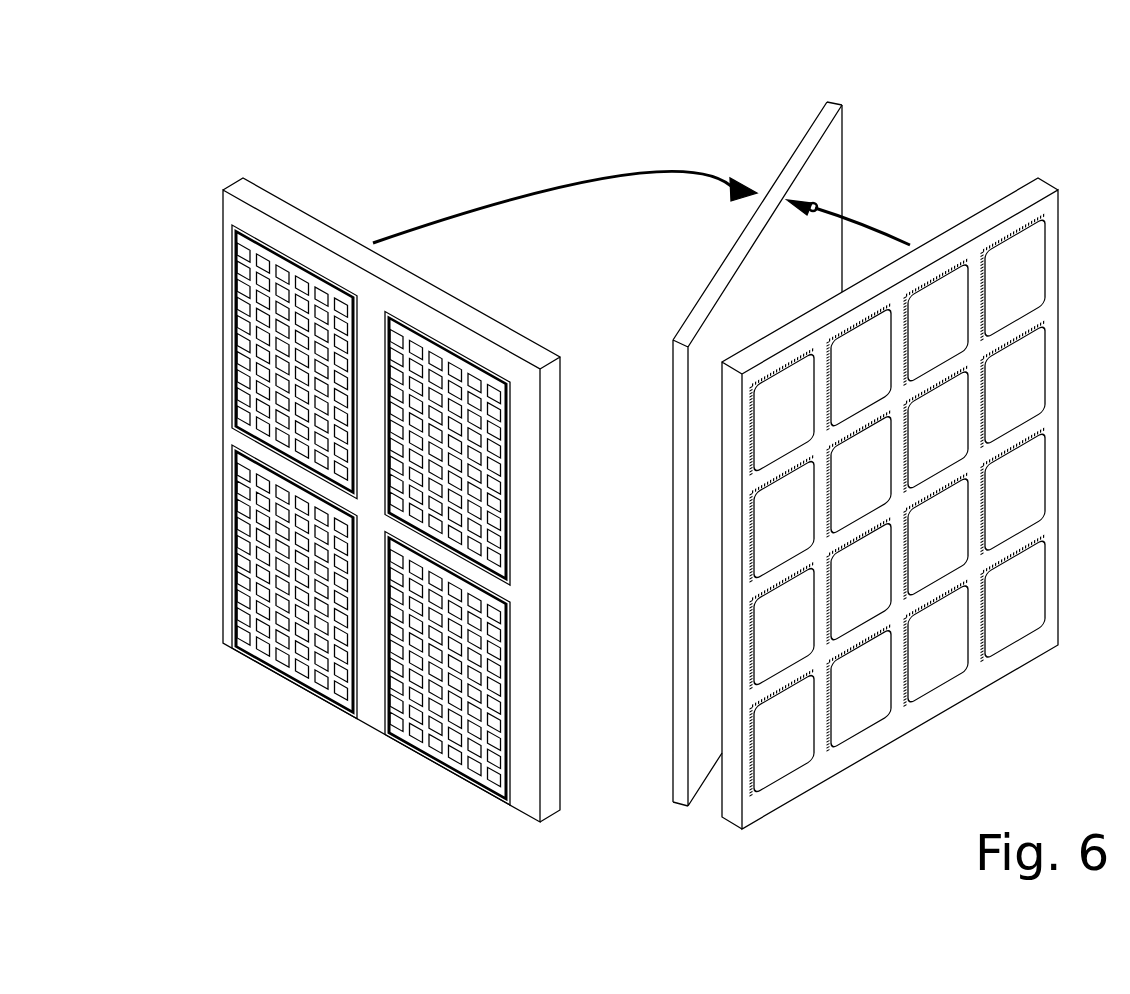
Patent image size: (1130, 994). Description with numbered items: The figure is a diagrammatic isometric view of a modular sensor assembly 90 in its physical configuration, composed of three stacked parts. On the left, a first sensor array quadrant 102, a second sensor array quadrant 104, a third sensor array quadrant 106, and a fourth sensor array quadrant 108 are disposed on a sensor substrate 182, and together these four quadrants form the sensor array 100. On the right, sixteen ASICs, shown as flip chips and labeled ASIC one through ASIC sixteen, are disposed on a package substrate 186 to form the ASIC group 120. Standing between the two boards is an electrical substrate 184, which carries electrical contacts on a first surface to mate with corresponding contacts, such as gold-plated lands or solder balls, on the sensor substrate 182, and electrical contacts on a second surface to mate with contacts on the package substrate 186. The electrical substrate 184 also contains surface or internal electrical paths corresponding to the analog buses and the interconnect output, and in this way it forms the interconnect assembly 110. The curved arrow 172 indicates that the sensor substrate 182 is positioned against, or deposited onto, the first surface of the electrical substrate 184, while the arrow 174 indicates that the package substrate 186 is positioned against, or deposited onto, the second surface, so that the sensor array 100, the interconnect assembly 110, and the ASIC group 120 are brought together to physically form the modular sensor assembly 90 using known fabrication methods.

The modular sensor assembly 90 is at (632, 445).
The sensor array 100 is at (355, 500).
The first sensor array quadrant 102 is at (222, 308).
The second sensor array quadrant 104 is at (466, 353).
The third sensor array quadrant 106 is at (263, 668).
The fourth sensor array quadrant 108 is at (452, 765).
The interconnect assembly 110 is at (791, 434).
The ASIC group 120 is at (918, 467).
The arrow 172 is at (590, 190).
The arrow 174 is at (877, 222).
The sensor substrate 182 is at (290, 217).
The electrical substrate 184 is at (843, 135).
The package substrate 186 is at (1056, 308).